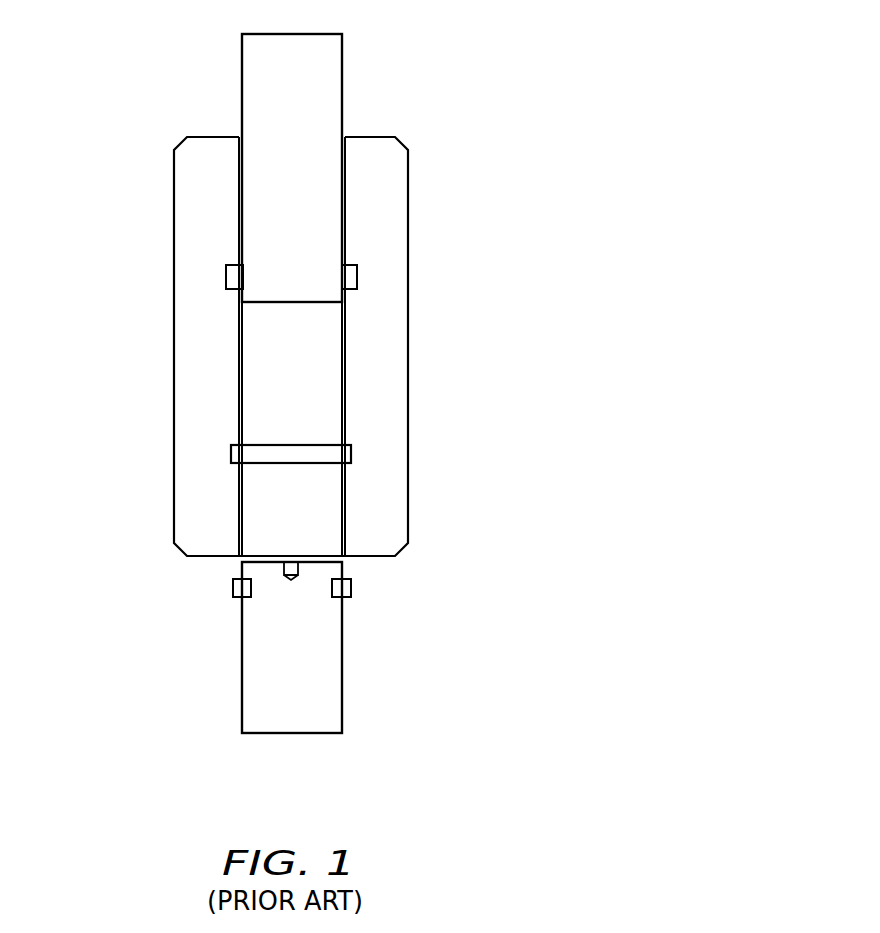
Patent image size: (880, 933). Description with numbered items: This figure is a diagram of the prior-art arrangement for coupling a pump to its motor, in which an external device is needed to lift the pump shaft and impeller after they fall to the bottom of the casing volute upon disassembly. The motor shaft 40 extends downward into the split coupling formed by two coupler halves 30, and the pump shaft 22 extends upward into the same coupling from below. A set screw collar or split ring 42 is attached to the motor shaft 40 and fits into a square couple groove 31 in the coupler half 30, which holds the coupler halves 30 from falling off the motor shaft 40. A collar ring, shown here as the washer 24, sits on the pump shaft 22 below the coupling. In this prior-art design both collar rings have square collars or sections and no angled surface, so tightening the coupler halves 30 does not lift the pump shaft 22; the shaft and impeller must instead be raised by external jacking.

The pump shaft 22 is at (311, 655).
The tapered washer 24 is at (351, 588).
The coupler half 30 is at (212, 228).
The couple groove 31 is at (348, 265).
The motor shaft 40 is at (325, 79).
The set screw collar or split ring 42 is at (350, 277).